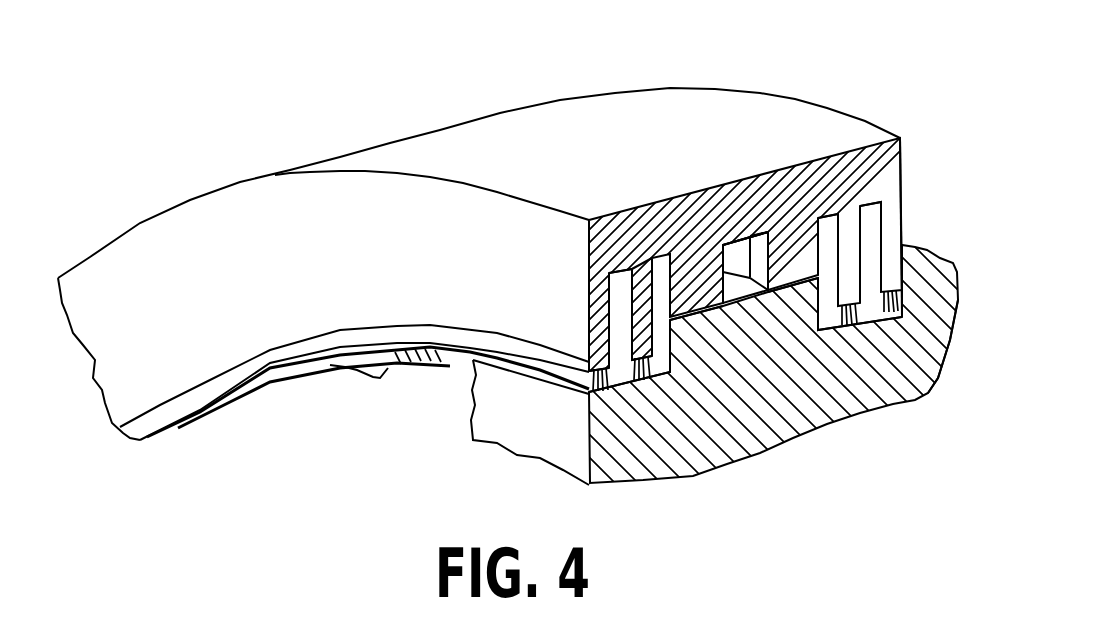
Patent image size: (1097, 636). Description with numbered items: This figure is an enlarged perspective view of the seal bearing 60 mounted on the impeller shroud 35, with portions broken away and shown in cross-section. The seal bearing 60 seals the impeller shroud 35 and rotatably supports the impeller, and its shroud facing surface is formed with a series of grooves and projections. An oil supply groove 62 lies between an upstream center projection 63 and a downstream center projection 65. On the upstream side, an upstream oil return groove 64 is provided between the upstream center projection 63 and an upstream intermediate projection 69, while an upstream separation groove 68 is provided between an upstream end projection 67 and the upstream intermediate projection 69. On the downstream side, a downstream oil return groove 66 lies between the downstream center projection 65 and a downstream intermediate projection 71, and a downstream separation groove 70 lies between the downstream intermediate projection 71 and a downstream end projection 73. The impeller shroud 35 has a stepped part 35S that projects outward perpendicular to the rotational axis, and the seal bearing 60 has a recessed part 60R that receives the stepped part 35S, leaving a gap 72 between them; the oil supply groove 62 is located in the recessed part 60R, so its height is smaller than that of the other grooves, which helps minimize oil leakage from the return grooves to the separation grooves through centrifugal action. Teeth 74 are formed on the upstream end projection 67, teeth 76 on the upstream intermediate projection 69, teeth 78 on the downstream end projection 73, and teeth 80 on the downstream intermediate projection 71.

The seal bearing 60 is at (541, 128).
The recessed part 60R is at (866, 205).
The oil supply groove 62 is at (693, 265).
The upstream center projection 63 is at (660, 253).
The upstream oil return groove 64 is at (650, 255).
The downstream center projection 65 is at (748, 233).
The downstream oil return groove 66 is at (828, 230).
The upstream end projection 67 is at (596, 348).
The upstream separation groove 68 is at (603, 314).
The upstream intermediate projection 69 is at (623, 327).
The downstream separation groove 70 is at (902, 222).
The downstream intermediate projection 71 is at (887, 270).
The gap 72 is at (735, 263).
The downstream end projection 73 is at (872, 215).
The teeth 74 is at (587, 387).
The teeth 76 is at (634, 363).
The impeller shroud 35 is at (757, 406).
The stepped part 35S is at (764, 340).
The teeth 78 is at (930, 398).
The teeth 80 is at (878, 325).